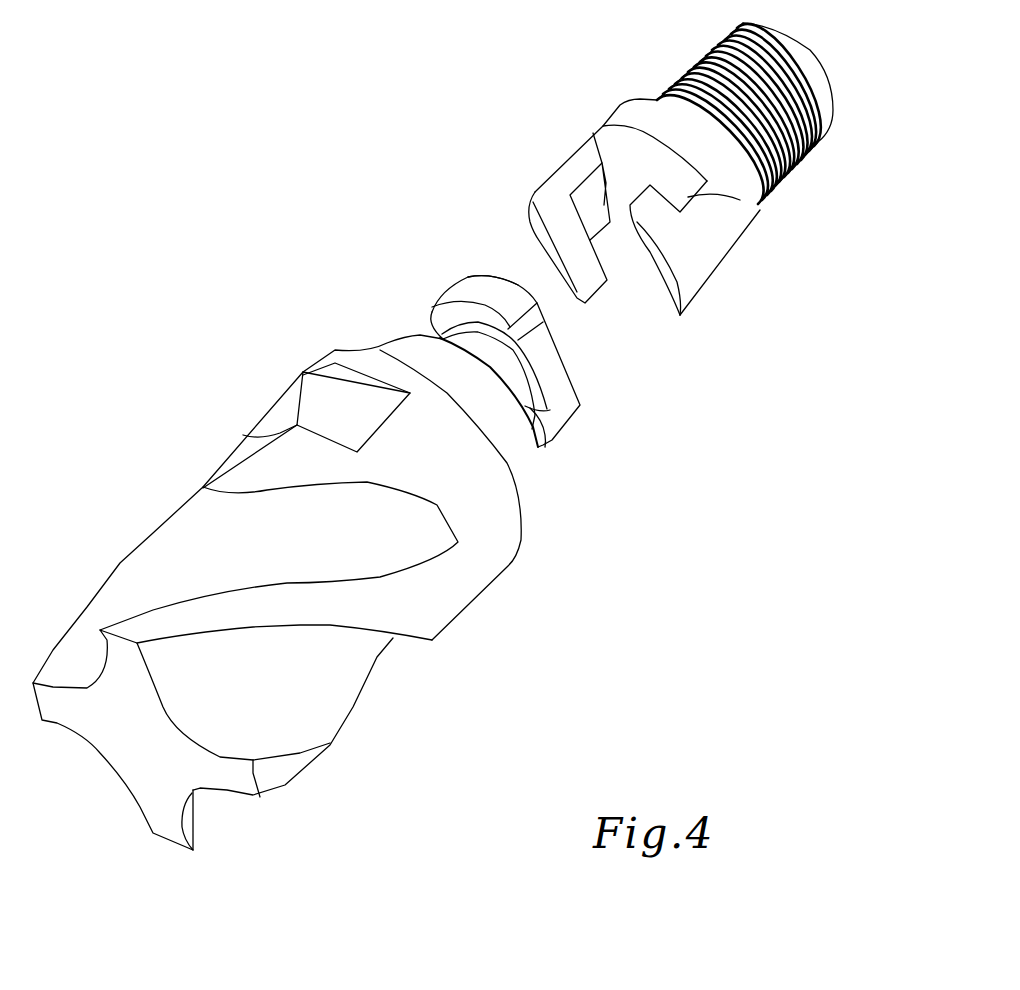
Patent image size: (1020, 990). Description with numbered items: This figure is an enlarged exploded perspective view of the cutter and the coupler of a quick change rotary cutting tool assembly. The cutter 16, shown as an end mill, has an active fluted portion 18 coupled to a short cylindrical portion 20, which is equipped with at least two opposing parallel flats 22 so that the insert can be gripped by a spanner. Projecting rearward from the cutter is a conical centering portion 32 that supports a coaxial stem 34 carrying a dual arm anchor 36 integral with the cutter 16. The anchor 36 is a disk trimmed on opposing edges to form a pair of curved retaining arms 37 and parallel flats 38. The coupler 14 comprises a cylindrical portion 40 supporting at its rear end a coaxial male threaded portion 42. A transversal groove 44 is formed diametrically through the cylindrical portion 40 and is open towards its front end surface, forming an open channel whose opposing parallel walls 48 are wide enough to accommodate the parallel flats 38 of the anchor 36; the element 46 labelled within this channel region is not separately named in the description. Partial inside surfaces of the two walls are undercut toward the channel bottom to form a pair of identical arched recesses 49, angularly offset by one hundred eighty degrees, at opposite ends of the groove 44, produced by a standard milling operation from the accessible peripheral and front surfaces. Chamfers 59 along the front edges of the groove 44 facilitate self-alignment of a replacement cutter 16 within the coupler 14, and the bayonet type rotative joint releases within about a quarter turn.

The coupler 14 is at (620, 104).
The cutter 16 is at (150, 527).
The active fluted portion 18 is at (297, 778).
The cylindrical portion 20 is at (497, 540).
The parallel flats 22 is at (285, 410).
The conical centering portion 32 is at (398, 343).
The coaxial stem 34 is at (540, 410).
The dual arm anchor 36 is at (430, 312).
The curved retaining arms 37 is at (490, 282).
The parallel flats 38 is at (567, 388).
The cylindrical portion 40 is at (734, 252).
The male threaded portion 42 is at (805, 155).
The transversal groove 44 is at (638, 282).
The first slot 46 is at (548, 260).
The parallel walls 48 is at (555, 197).
The recesses 49 is at (593, 205).
The chamfers 59 is at (575, 298).